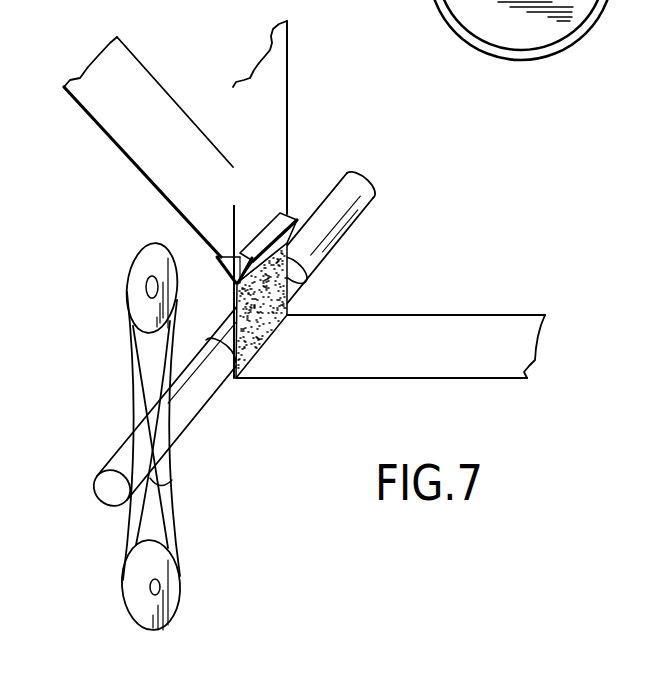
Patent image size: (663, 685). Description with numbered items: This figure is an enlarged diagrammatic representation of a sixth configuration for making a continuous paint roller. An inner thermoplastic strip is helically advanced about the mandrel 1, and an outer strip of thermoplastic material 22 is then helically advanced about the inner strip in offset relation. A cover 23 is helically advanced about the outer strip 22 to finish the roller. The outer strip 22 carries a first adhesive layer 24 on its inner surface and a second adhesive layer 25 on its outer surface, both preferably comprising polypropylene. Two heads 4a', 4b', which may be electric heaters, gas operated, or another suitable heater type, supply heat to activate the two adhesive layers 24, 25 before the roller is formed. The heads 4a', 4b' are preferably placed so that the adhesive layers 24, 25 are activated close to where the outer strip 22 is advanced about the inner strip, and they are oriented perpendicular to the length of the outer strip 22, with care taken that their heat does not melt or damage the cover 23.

The mandrel 1 is at (372, 193).
The outer strip of thermoplastic material 22 is at (289, 110).
The cover 23 is at (133, 67).
The first adhesive layer 24 is at (249, 133).
The second adhesive layer 25 is at (268, 157).
The head 4a' is at (183, 243).
The head 4b' is at (216, 292).